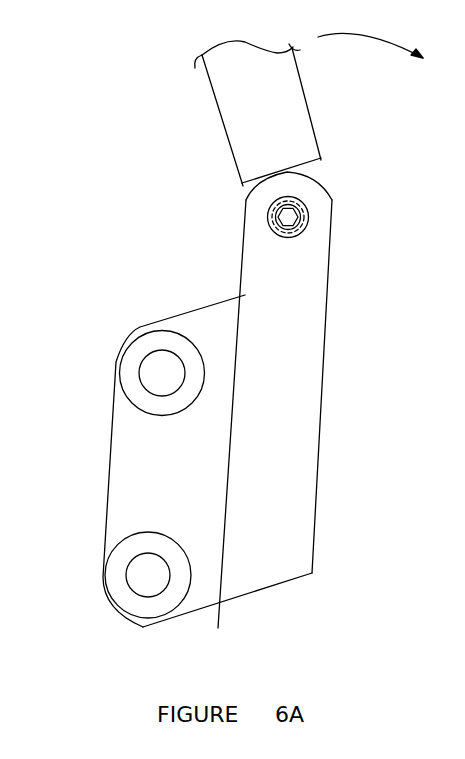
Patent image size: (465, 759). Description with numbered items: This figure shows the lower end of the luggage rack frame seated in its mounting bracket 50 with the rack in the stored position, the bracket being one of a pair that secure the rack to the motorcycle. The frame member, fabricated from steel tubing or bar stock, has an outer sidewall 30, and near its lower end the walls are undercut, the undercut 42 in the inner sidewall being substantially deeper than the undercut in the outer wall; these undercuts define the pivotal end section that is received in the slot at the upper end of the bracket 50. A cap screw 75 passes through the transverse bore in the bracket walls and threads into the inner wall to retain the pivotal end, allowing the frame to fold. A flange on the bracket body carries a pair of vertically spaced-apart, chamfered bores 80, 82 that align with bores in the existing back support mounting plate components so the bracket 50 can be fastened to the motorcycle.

The outer sidewall 30 is at (295, 94).
The undercut 42 is at (313, 163).
The mounting bracket 50 is at (307, 443).
The cap screw 75 is at (290, 213).
The bore 80 is at (152, 380).
The bore 82 is at (138, 582).